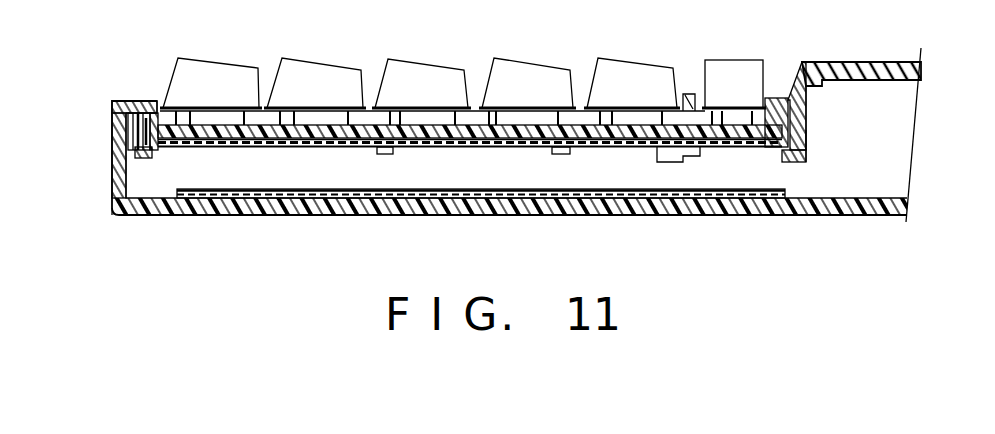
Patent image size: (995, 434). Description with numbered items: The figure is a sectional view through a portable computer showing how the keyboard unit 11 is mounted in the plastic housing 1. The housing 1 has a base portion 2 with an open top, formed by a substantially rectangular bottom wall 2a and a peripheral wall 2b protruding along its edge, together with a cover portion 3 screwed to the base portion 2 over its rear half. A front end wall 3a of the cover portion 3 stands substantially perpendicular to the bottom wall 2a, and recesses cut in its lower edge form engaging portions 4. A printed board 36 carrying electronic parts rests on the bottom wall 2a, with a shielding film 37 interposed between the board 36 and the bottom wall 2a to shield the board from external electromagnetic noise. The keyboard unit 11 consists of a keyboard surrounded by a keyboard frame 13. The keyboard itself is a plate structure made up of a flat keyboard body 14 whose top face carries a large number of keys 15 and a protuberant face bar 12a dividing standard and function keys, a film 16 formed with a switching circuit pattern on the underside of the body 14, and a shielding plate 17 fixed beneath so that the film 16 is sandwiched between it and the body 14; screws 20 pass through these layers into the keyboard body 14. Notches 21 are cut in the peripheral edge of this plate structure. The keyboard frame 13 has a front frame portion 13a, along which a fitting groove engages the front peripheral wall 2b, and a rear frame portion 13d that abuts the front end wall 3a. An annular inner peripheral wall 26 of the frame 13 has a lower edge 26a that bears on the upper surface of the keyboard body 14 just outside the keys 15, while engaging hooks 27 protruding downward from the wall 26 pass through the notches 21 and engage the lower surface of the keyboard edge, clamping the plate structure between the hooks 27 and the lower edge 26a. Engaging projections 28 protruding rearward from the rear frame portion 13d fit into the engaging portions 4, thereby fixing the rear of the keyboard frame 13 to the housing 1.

The housing 1 is at (124, 216).
The base portion 2 is at (455, 208).
The bottom wall 2a is at (508, 208).
The peripheral wall 2b is at (118, 178).
The cover portion 3 is at (882, 71).
The front end wall 3a is at (807, 108).
The engaging portion 4 is at (807, 141).
The keyboard unit 11 is at (267, 60).
The protuberant face bar 12a is at (687, 96).
The keyboard frame 13 is at (113, 104).
The front frame portion 13a is at (122, 101).
The rear frame portion 13d is at (788, 100).
The keyboard body 14 is at (253, 150).
The keys 15 is at (600, 72).
The film 16 is at (297, 150).
The shielding plate 17 is at (343, 150).
The screws for keyboard assembly 20 is at (389, 156).
The notches 21 is at (160, 127).
The inner peripheral wall 26 is at (122, 133).
The lower edge 26a is at (779, 106).
The engaging hooks 27 is at (164, 158).
The engaging projections 28 is at (798, 163).
The printed board 36 is at (747, 199).
The shielding film 37 is at (712, 202).